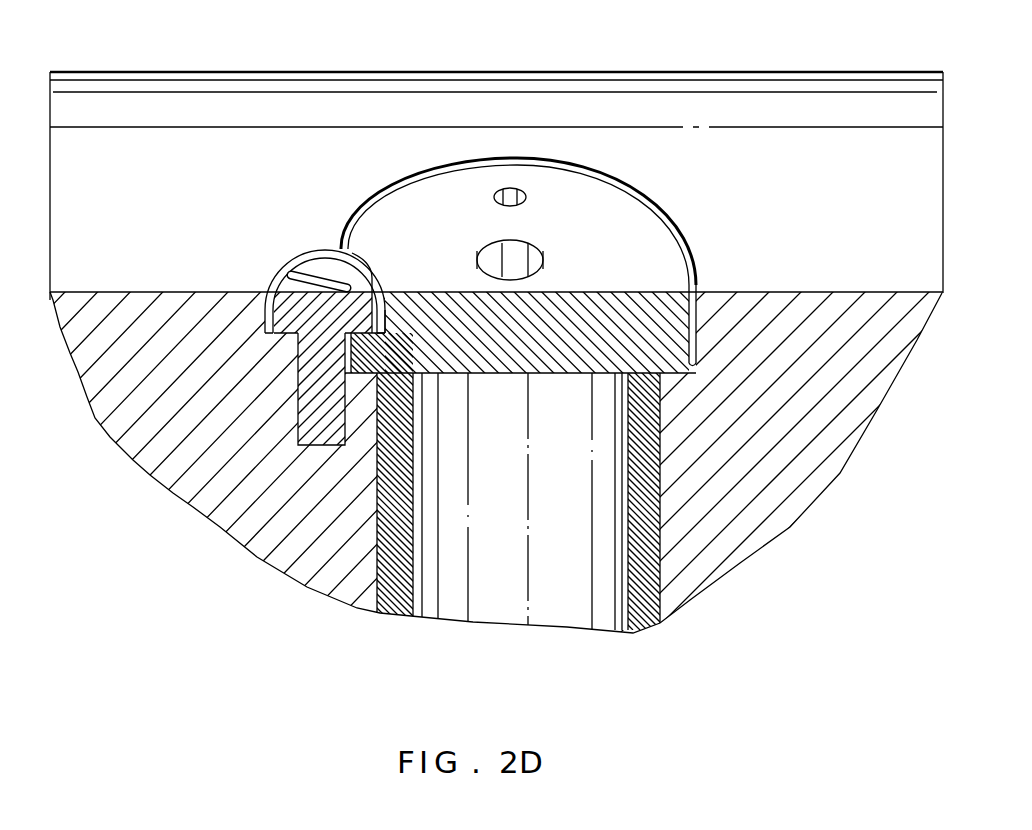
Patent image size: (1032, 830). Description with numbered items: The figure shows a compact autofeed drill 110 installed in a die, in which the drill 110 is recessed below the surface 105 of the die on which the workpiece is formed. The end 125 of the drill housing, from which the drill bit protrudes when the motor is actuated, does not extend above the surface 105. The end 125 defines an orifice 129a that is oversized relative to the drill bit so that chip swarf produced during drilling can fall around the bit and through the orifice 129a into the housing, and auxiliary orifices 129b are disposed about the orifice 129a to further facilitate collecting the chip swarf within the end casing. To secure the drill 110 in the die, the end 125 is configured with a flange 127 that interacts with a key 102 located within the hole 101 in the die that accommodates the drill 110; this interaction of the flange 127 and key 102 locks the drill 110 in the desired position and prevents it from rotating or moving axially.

The surface 105 is at (819, 84).
The drill 110 is at (540, 200).
The end 125 is at (543, 262).
The hole 101 is at (380, 196).
The key 102 is at (294, 264).
The flange 127 is at (360, 378).
The orifice 129a is at (546, 262).
The auxiliary orifices 129b is at (510, 187).